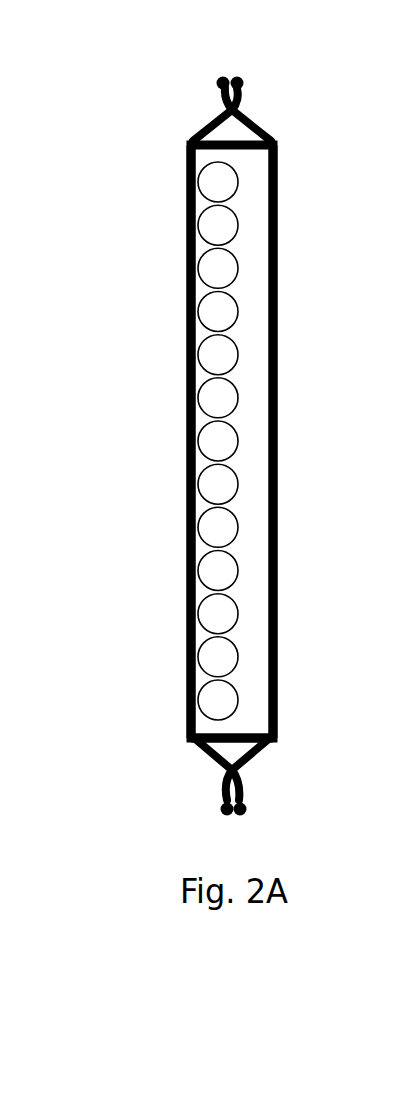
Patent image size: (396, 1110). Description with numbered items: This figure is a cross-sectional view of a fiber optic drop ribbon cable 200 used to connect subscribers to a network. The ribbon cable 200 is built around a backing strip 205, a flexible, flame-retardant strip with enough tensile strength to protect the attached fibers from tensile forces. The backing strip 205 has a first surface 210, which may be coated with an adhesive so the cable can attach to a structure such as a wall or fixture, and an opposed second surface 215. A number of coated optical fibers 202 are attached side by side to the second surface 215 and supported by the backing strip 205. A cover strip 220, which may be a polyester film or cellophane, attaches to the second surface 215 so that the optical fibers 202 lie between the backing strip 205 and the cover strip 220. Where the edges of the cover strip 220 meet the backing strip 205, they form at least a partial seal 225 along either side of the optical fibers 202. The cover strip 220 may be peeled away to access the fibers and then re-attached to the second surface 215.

The ribbon cable 200 is at (112, 172).
The coated optical fibers 202 is at (218, 268).
The backing strip 205 is at (172, 297).
The first surface 210 is at (188, 648).
The second surface 215 is at (203, 717).
The cover strip 220 is at (288, 249).
The partial seal 225 is at (252, 102).